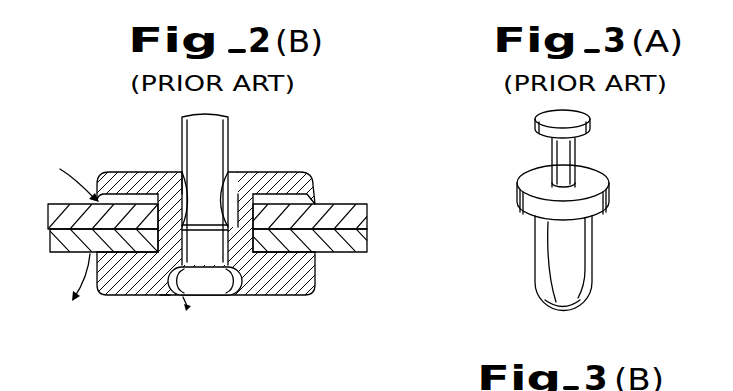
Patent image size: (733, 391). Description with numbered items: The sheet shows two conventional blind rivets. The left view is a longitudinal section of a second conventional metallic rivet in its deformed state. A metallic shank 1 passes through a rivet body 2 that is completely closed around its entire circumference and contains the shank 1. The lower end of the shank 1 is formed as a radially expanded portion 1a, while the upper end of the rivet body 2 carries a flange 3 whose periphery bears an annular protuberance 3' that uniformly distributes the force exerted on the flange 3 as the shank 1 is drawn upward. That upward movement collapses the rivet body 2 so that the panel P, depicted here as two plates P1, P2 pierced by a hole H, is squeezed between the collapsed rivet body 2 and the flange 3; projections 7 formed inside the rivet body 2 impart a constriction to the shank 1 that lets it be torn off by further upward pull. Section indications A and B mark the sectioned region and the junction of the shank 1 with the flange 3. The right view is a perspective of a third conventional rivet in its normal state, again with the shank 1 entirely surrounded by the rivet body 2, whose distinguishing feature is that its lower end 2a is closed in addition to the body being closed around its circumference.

In FIG. 2B, the shank 1 is at (212, 136).
In FIG. 3A, the shank 1 is at (565, 158).
In FIG. 2B, the expanded portion 1a is at (212, 283).
In FIG. 2B, the rivet body 2 is at (303, 283).
In FIG. 3A, the rivet body 2 is at (583, 245).
In FIG. 2B, the lower end 2a is at (166, 283).
In FIG. 3A, the lower end 2a is at (561, 308).
In FIG. 2B, the flange 3 is at (139, 158).
In FIG. 3A, the flange 3 is at (549, 175).
In FIG. 2B, the annular protuberance 3' is at (296, 176).
In FIG. 2B, the projections 7 is at (230, 180).
In FIG. 2B, the section line A- A is at (73, 240).
In FIG. 2B, the junction between pin and flange B is at (182, 172).
In FIG. 2B, the hole H is at (264, 242).
In FIG. 2B, the panel P is at (253, 226).
In FIG. 2B, the first panel P1 is at (353, 217).
In FIG. 2B, the second panel P2 is at (353, 240).